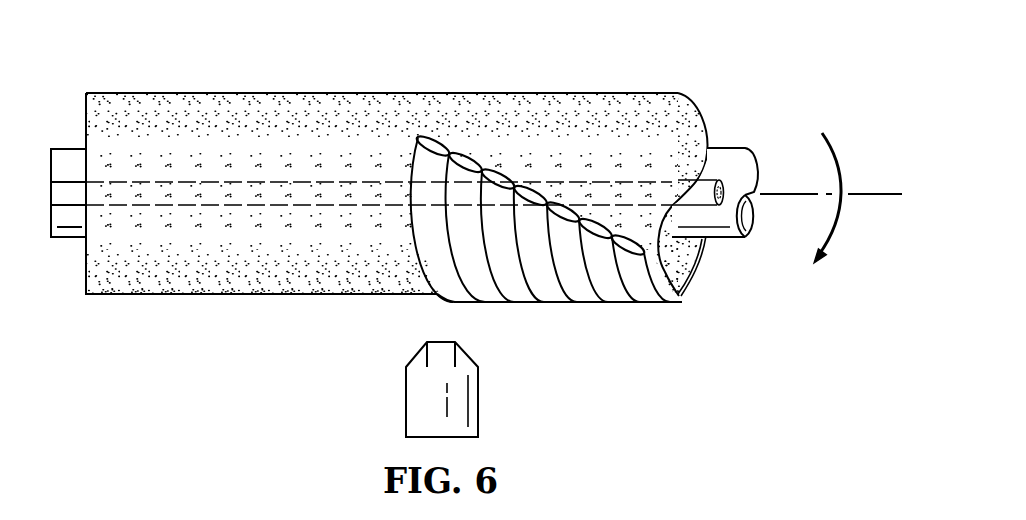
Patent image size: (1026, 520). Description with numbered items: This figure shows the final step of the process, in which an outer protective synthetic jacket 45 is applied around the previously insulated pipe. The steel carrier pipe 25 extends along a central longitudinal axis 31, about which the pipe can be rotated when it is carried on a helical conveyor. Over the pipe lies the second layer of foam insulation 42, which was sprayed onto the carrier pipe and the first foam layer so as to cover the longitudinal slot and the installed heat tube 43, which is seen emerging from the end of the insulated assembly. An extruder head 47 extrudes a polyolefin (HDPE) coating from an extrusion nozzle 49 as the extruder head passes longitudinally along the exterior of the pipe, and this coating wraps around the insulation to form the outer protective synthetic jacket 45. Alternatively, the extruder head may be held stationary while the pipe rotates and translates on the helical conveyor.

The steel carrier pipe 25 is at (66, 144).
The central longitudinal axis 31 is at (874, 193).
The second layer of foam insulation 42 is at (478, 102).
The heat tube 43 is at (703, 190).
The outer protective synthetic jacket 45 is at (624, 293).
The extruder head 47 is at (415, 403).
The extrusion nozzle 49 is at (440, 352).